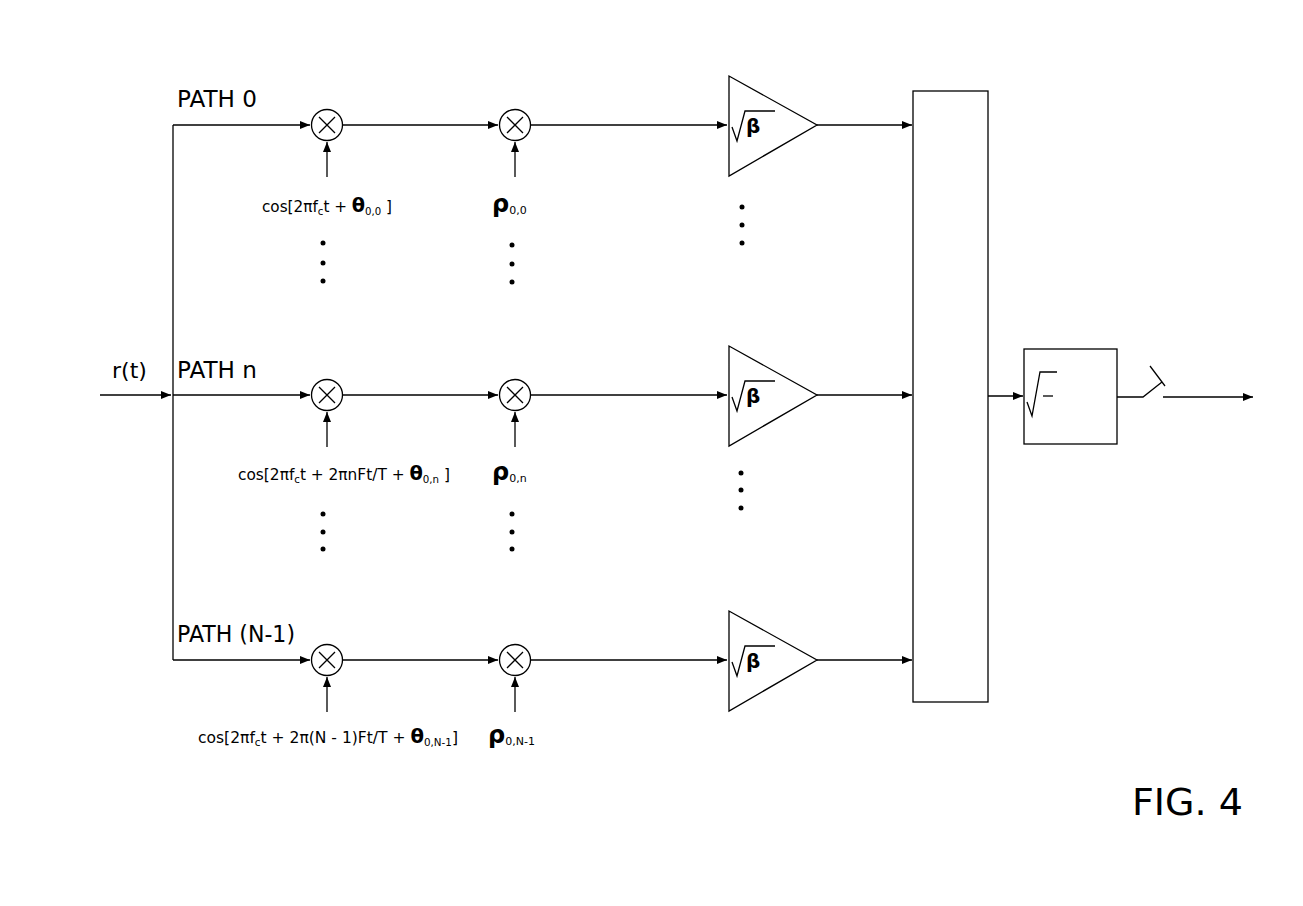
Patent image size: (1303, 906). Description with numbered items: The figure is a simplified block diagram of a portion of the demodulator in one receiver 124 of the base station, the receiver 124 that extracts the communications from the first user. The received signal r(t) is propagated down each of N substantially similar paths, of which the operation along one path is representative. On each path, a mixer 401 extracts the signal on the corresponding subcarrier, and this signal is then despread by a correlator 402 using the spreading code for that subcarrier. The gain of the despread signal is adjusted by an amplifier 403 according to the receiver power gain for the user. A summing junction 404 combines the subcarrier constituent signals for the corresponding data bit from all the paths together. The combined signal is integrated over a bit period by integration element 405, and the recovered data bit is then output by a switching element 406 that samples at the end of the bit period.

The mixer 401 is at (327, 108).
The correlator 402 is at (515, 108).
The amplifier 403 is at (745, 83).
The summing junction 404 is at (953, 90).
The integration element 405 is at (1062, 348).
The switching element 406 is at (1142, 393).
The receiver 124 is at (1080, 548).